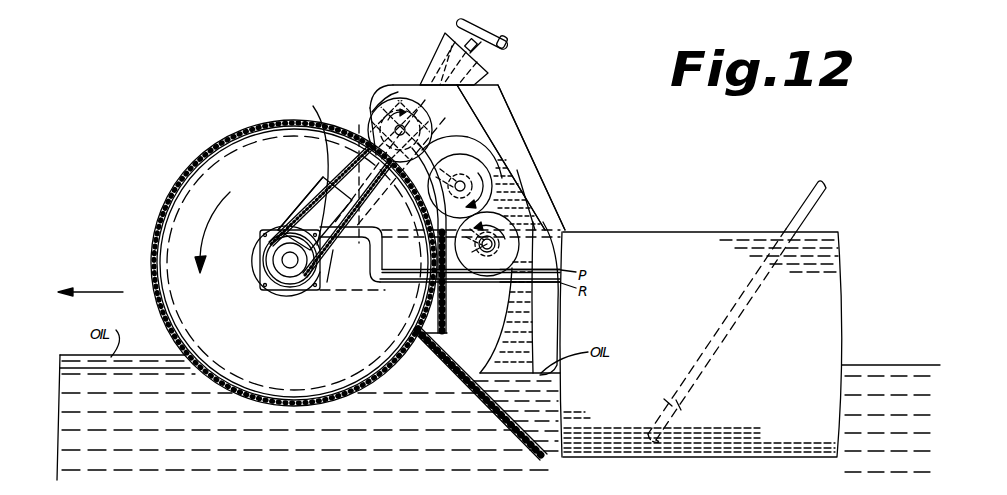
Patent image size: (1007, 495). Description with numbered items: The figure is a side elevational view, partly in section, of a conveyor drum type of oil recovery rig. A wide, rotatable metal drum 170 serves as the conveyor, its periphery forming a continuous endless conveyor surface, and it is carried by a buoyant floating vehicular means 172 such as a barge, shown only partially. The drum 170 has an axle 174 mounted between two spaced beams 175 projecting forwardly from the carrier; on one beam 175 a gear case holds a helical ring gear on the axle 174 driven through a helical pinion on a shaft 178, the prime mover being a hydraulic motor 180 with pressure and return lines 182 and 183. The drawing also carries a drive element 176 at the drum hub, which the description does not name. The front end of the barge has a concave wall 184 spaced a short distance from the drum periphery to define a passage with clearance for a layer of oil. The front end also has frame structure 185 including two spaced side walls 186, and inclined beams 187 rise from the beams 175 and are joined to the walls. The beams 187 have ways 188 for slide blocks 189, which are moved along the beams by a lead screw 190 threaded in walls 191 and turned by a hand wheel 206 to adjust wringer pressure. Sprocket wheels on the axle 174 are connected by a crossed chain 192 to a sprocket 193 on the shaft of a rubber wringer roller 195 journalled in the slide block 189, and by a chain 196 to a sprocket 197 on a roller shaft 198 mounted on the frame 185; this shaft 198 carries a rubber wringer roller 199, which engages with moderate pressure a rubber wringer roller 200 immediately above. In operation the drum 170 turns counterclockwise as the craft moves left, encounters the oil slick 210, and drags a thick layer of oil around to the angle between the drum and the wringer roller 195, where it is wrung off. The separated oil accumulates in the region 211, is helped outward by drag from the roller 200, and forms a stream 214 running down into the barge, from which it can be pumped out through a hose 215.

The rotatable metal drum 170 is at (151, 245).
The buoyant floating vehicular means 172 is at (634, 233).
The axle 174 is at (268, 288).
The spaced beams 175 is at (352, 285).
The drive chain 176 is at (320, 235).
The shaft 178 is at (308, 200).
The hydraulic motor 180 is at (327, 282).
The pressure line 182 is at (552, 262).
The return line 183 is at (556, 300).
The concave wall 184 is at (436, 332).
The frame structure 185 is at (518, 113).
The side walls 186 is at (515, 138).
The inclined beams 187 is at (322, 215).
The ways 188 is at (441, 138).
The slide blocks 189 is at (445, 36).
The lead screw 190 is at (497, 86).
The walls 191 is at (449, 32).
The crossed chain 192 is at (301, 167).
The sprocket 193 is at (373, 147).
The rubber wringer roller 195 is at (378, 98).
The chain 196 is at (372, 284).
The sprocket 197 is at (490, 276).
The roller shaft 198 is at (483, 252).
The rubber wringer roller 199 is at (512, 222).
The rubber wringer roller 200 is at (497, 170).
The hand wheel 206 is at (488, 26).
The oil slick 210 is at (80, 333).
The region 211 is at (376, 205).
The stream 214 is at (511, 181).
The hose 215 is at (800, 212).